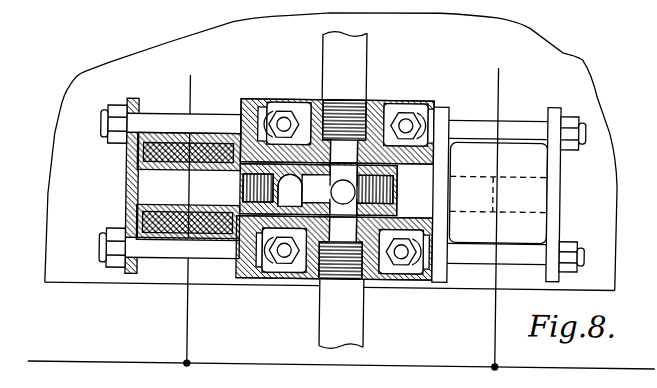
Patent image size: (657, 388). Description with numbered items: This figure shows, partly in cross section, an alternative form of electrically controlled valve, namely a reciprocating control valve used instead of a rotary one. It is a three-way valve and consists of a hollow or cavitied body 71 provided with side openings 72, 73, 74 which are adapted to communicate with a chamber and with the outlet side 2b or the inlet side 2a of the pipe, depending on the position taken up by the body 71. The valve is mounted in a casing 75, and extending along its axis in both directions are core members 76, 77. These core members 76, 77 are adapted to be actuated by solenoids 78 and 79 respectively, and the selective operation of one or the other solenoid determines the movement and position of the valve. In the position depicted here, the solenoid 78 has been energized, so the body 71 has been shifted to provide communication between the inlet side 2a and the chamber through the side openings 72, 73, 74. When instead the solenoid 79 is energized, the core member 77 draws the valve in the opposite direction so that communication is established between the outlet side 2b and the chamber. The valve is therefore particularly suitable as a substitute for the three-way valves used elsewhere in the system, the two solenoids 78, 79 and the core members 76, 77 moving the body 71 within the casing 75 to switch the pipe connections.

The inlet side of pipe 2a is at (353, 69).
The outlet side of pipe 2b is at (333, 309).
The hollow body 71 is at (372, 158).
The side opening 72 is at (397, 209).
The side opening 73 is at (288, 199).
The side opening 74 is at (340, 153).
The casing 75 is at (363, 268).
The core member 76 is at (155, 186).
The core member 77 is at (474, 185).
The solenoid 78 is at (155, 222).
The solenoid 79 is at (550, 195).